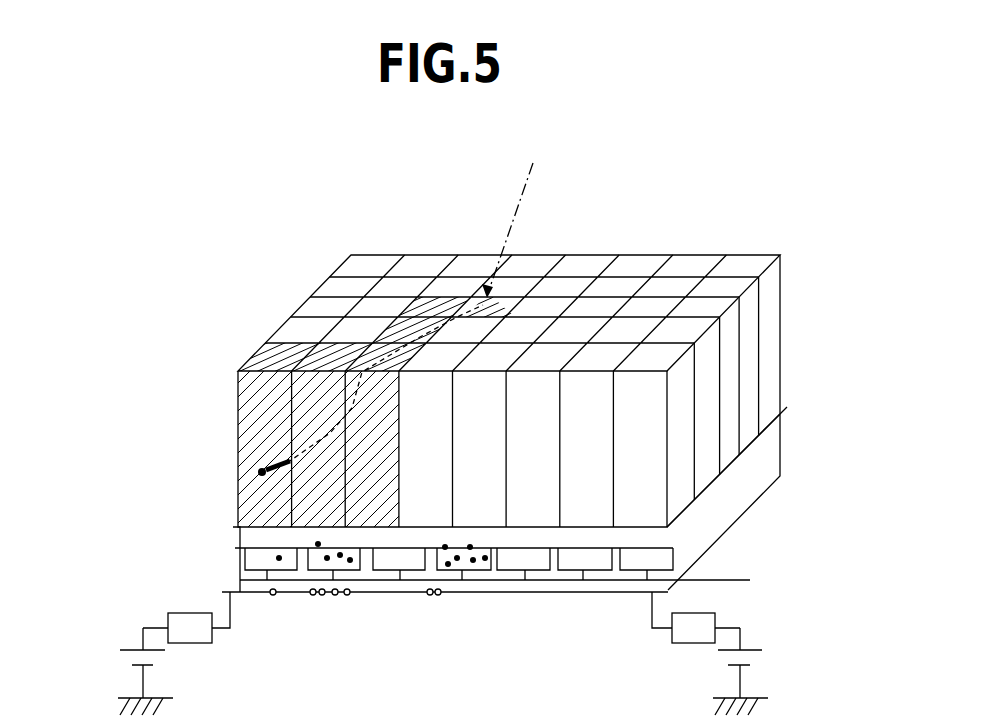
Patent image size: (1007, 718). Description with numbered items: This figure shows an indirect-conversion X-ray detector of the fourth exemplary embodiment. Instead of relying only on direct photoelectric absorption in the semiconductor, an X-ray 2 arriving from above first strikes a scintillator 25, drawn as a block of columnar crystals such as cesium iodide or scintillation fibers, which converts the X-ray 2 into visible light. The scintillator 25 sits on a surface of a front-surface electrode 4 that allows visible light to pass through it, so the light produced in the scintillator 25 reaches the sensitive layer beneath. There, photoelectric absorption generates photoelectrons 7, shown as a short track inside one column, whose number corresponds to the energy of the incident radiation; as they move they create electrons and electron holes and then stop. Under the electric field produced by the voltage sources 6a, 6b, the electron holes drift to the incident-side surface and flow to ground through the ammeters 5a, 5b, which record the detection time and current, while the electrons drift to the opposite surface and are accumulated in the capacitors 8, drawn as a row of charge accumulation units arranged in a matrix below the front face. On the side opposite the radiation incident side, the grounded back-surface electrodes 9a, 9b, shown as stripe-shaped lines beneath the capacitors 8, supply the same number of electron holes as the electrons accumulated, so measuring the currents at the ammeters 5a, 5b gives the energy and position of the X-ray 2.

The X-ray 2 is at (523, 197).
The scintillator 25 is at (770, 338).
The front-surface electrode 4 is at (762, 432).
The photoelectrons 7 is at (333, 433).
The capacitors 8 is at (240, 558).
The back-surface electrode 9a is at (378, 594).
The back-surface electrode 9b is at (523, 594).
The ammeter 5a is at (168, 620).
The ammeter 5b is at (715, 618).
The voltage source 6a is at (122, 660).
The voltage source 6b is at (757, 660).